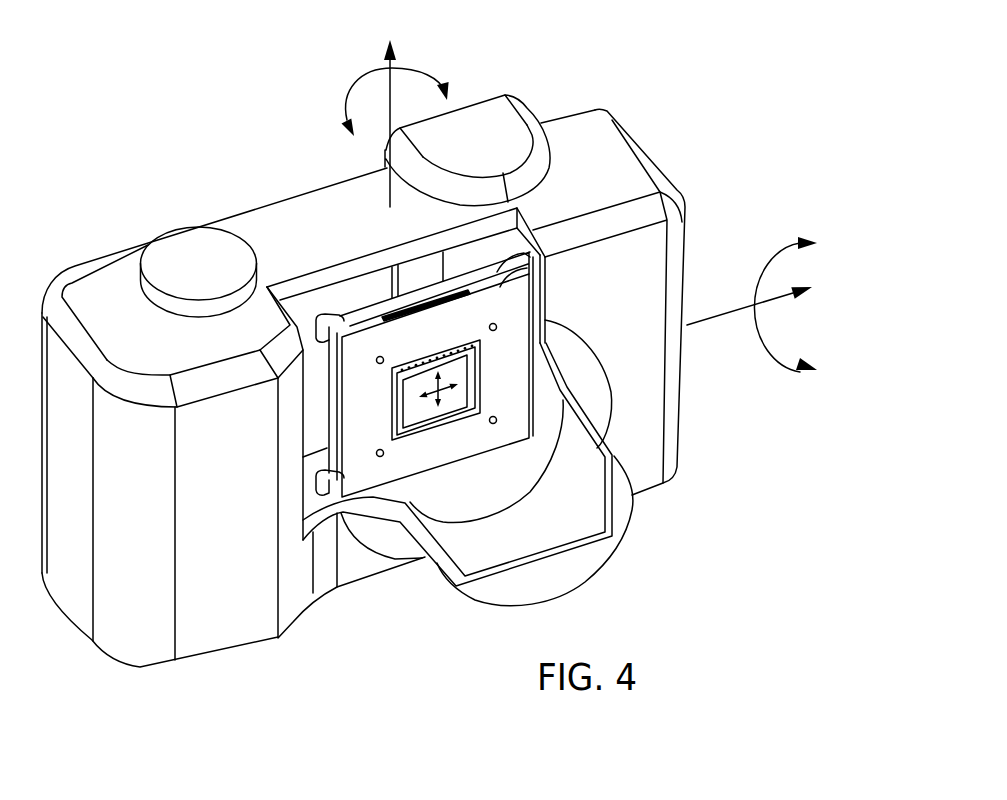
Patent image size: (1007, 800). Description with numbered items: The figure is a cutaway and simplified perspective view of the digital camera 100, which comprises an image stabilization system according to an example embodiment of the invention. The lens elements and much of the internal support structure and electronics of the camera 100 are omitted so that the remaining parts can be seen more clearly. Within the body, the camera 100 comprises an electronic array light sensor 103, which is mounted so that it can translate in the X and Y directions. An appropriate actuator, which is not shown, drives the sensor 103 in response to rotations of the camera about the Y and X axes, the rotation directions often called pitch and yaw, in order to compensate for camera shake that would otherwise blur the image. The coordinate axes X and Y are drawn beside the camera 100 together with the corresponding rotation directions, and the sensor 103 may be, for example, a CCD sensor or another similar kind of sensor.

The digital camera 100 is at (240, 165).
The electronic array light sensor 103 is at (458, 371).
The X axis X is at (760, 301).
The Y axis Y is at (388, 110).